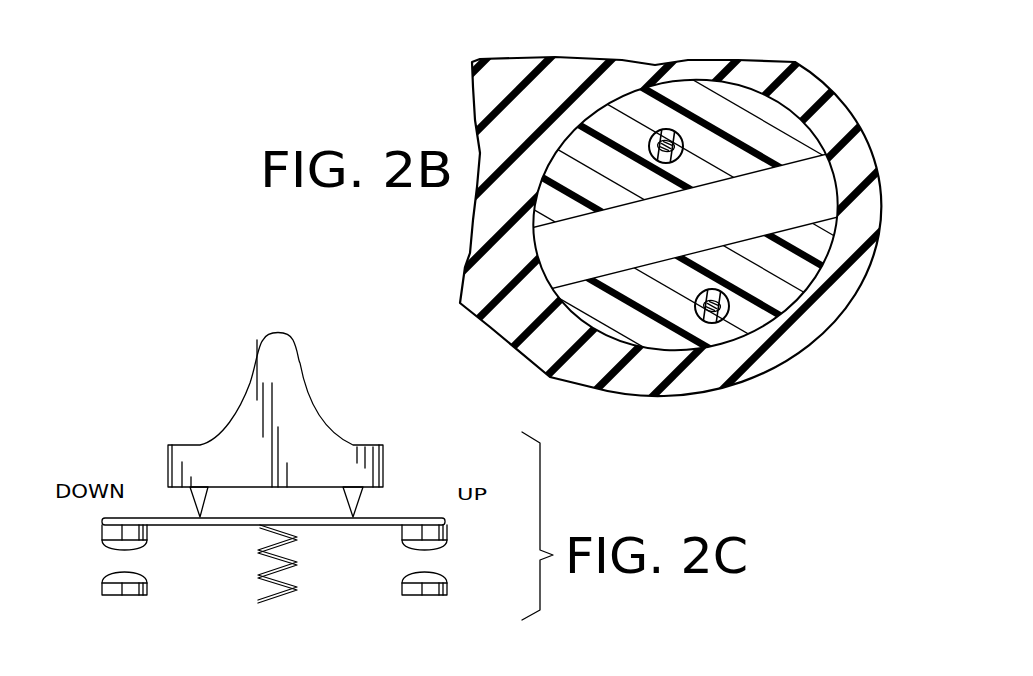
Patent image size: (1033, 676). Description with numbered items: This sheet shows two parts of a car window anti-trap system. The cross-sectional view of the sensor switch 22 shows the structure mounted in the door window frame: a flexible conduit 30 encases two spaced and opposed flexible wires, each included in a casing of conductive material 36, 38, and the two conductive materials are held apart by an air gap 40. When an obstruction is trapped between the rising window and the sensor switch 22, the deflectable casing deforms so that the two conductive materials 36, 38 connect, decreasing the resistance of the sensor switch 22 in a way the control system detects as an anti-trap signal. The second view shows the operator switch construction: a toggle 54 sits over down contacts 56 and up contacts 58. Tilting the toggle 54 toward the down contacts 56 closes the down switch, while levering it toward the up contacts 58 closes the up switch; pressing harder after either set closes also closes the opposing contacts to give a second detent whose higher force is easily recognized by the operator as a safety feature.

In FIG. 2B, the sensor switch 22 is at (456, 83).
In FIG. 2B, the flexible conduit 30 is at (803, 92).
In FIG. 2B, the conductive material 36 is at (669, 119).
In FIG. 2B, the conductive material 38 is at (722, 327).
In FIG. 2B, the air gap 40 is at (572, 242).
In FIG. 2C, the toggle 54 is at (257, 387).
In FIG. 2C, the down contacts 56 is at (87, 562).
In FIG. 2C, the up contacts 58 is at (447, 562).